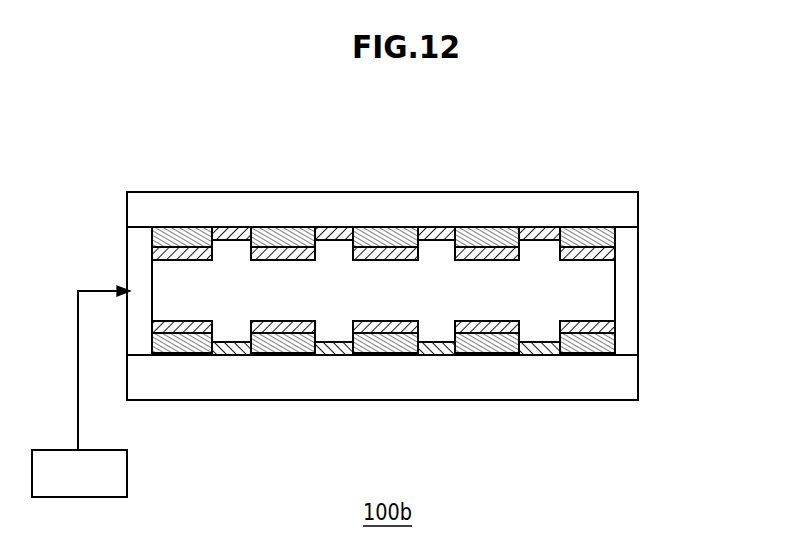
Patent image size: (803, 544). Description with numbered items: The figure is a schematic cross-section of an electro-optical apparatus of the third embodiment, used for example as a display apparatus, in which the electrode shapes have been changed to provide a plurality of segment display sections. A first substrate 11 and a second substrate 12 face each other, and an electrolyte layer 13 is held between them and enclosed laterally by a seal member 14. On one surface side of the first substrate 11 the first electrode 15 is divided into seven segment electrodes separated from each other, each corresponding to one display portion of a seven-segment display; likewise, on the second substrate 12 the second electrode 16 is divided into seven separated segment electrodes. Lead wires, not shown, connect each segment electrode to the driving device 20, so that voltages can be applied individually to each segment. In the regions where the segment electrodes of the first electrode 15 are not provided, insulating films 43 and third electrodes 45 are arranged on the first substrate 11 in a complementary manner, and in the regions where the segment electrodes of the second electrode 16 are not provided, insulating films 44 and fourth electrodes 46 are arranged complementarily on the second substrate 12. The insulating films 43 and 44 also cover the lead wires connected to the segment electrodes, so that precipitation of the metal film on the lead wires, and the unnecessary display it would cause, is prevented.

The first substrate 11 is at (638, 212).
The second substrate 12 is at (638, 378).
The electrolyte layer 13 is at (588, 298).
The seal member 14 is at (625, 275).
The first electrode 15 is at (339, 229).
The second electrode 16 is at (333, 355).
The driving device 20 is at (117, 447).
The insulating film 43 is at (593, 234).
The insulating film 44 is at (583, 357).
The third electrode 45 is at (540, 230).
The fourth electrode 46 is at (540, 355).